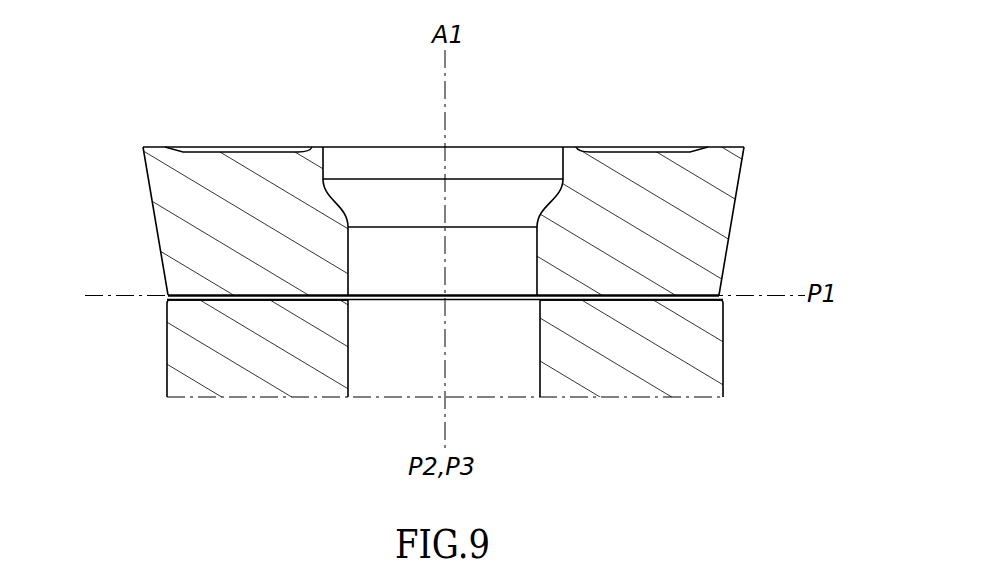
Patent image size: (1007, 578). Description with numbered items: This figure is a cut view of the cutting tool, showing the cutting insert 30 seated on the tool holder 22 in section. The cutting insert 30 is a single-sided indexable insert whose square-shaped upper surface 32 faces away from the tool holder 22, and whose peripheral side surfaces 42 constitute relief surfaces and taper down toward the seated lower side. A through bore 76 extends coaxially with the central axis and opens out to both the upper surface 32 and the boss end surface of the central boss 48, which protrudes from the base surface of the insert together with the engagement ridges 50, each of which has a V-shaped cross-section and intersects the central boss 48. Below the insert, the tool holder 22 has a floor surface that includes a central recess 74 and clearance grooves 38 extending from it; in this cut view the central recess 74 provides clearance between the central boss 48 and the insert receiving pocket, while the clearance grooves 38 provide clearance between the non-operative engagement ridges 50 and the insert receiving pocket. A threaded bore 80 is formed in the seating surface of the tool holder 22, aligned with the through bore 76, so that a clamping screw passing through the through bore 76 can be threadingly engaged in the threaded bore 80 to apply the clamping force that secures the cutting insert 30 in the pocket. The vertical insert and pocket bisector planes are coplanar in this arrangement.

The tool holder 22 is at (647, 362).
The cutting insert 30 is at (655, 208).
The upper surface 32 is at (617, 147).
The clearance grooves 38 is at (247, 297).
The side surfaces 42 is at (153, 210).
The central boss 48 is at (559, 298).
The engagement ridges 50 is at (225, 298).
The central recess 74 is at (333, 297).
The through bore 76 is at (518, 172).
The threaded bore 80 is at (398, 362).